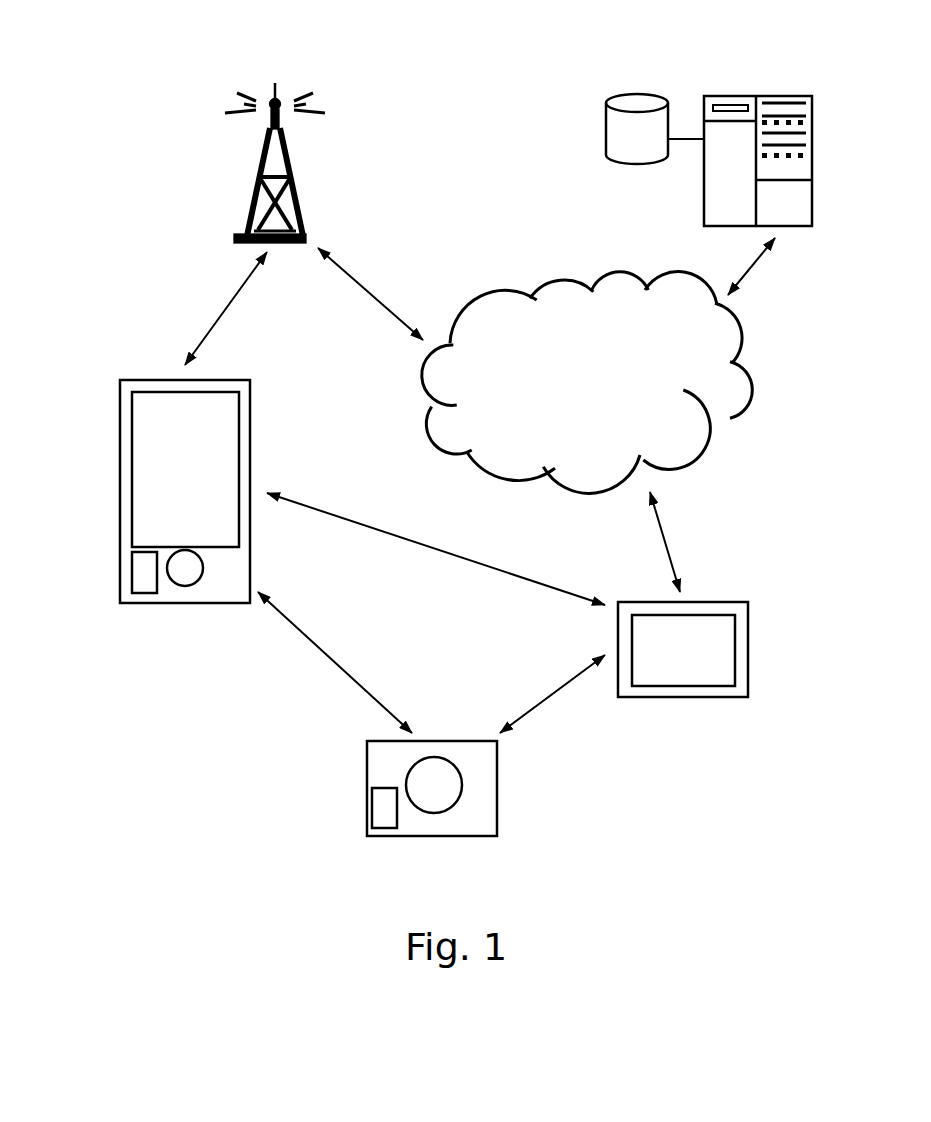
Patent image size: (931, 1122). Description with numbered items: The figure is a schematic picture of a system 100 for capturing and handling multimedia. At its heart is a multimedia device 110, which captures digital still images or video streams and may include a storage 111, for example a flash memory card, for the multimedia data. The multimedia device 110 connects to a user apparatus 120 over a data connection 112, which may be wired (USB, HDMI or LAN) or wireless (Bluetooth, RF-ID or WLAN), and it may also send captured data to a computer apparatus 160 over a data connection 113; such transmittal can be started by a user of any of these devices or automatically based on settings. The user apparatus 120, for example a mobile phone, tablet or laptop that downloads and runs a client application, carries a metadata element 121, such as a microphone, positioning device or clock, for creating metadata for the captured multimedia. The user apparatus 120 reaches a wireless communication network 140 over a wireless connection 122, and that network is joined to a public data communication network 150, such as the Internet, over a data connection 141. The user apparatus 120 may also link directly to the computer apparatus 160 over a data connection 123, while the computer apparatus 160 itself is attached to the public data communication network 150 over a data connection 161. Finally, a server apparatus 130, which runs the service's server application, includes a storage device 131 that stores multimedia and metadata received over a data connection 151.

The system 100 is at (482, 39).
The multimedia device 110 is at (497, 795).
The storage 111 is at (382, 806).
The data connection 112 is at (326, 650).
The data connection 113 is at (537, 700).
The user apparatus 120 is at (250, 411).
The metadata element 121 is at (147, 593).
The wireless connection 122 is at (222, 306).
The data connection 123 is at (440, 548).
The server apparatus 130 is at (742, 96).
The storage device 131 is at (632, 163).
The wireless communication network 140 is at (262, 156).
The data connection 141 is at (365, 290).
The public data communication network 150 is at (730, 420).
The data connection 151 is at (755, 262).
The computer apparatus 160 is at (680, 697).
The data connection 161 is at (690, 556).